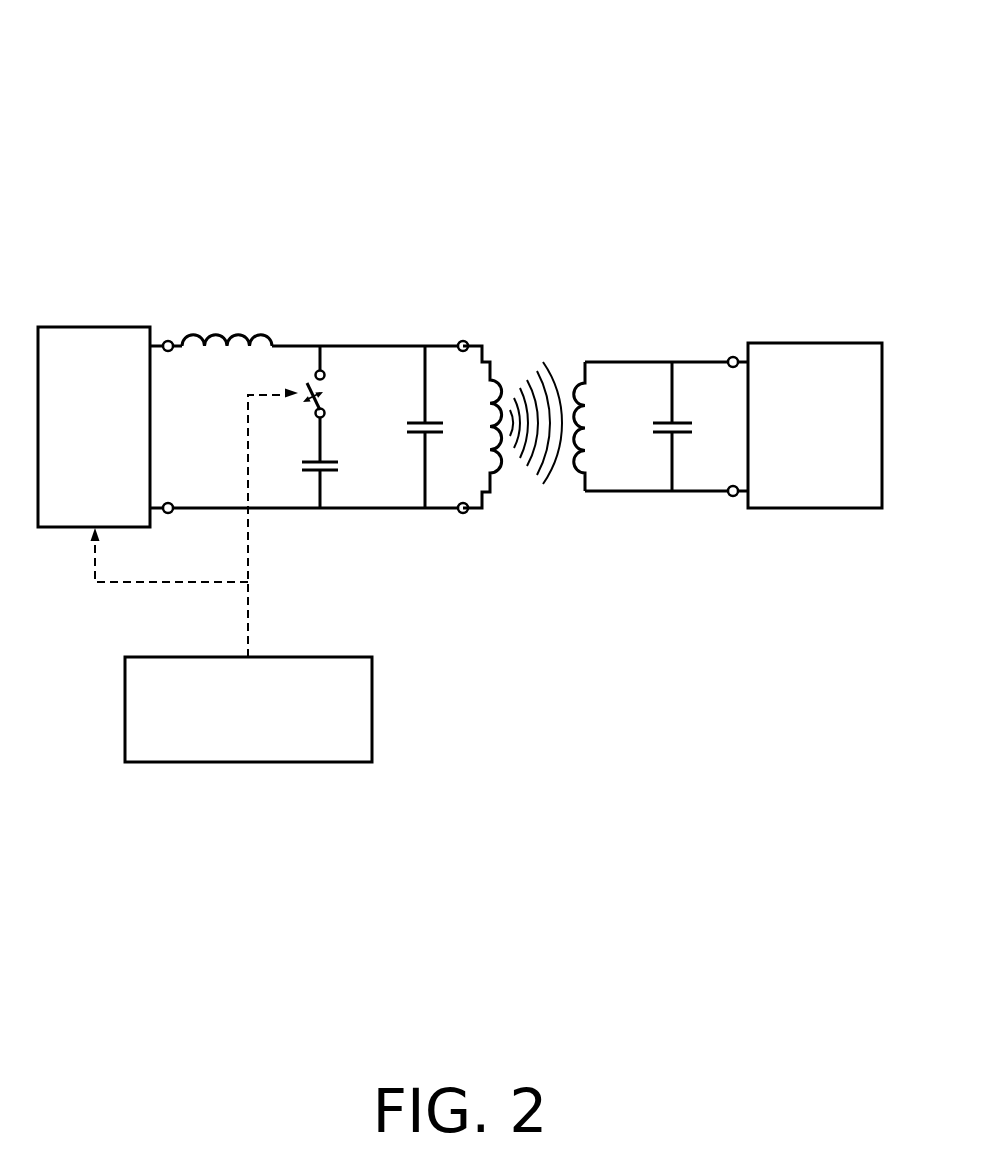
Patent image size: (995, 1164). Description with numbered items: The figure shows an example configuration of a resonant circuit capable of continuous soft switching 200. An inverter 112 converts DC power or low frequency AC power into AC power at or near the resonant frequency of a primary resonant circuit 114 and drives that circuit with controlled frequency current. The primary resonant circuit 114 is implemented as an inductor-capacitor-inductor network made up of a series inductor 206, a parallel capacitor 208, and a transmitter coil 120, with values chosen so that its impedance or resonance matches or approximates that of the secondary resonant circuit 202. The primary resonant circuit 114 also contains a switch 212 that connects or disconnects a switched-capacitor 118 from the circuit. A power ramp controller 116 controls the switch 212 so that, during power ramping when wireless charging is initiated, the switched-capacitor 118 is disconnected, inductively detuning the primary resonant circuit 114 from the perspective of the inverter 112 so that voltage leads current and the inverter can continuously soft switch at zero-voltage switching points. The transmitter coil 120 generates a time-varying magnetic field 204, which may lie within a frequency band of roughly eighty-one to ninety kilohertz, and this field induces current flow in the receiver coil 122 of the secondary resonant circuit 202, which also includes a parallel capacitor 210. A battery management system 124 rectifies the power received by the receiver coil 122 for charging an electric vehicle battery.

The example configuration of a resonant circuit capable of continuous soft switching 200 is at (765, 58).
The inverter 112 is at (94, 427).
The primary resonant circuit 114 is at (172, 318).
The power ramp controller 116 is at (232, 576).
The switched-capacitor 118 is at (335, 494).
The transmitter coil 120 is at (505, 341).
The receiver coil 122 is at (602, 475).
The battery management system 124 is at (815, 425).
The secondary resonant circuit 202 is at (585, 343).
The time-varying magnetic field 204 is at (555, 504).
The series inductor 206 is at (244, 362).
The parallel capacitor 208 is at (439, 494).
The parallel capacitor 210 is at (689, 474).
The switch 212 is at (340, 378).